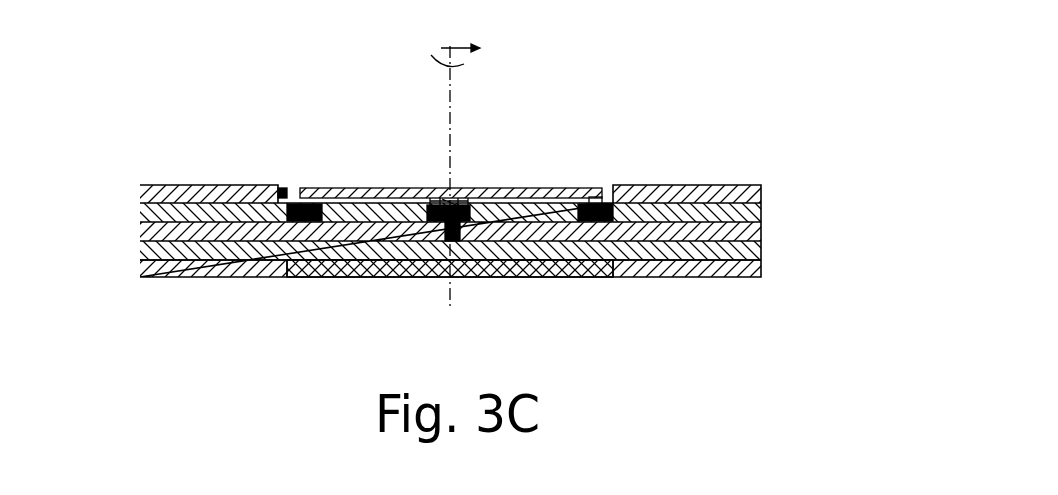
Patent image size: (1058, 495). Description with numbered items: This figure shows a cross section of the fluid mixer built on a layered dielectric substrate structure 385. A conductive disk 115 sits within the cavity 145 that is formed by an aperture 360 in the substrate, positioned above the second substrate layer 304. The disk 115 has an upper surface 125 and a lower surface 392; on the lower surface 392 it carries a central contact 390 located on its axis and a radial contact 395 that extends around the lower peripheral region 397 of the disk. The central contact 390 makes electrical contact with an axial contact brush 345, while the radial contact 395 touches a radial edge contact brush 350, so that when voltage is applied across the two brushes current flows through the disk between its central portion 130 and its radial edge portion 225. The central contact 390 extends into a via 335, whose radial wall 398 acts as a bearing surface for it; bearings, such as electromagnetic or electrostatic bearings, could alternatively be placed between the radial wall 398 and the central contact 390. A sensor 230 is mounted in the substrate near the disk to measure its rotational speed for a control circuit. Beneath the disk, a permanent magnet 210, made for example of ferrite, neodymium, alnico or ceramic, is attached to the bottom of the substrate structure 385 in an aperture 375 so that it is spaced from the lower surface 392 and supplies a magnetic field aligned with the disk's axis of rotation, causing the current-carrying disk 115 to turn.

The substrate structure 385 is at (777, 185).
The second substrate layer 304 is at (762, 213).
The aperture 375 is at (436, 268).
The magnet 210 is at (392, 268).
The central contact 390 is at (437, 203).
The radial edge contact brush 350 is at (610, 222).
The axial contact brush 345 is at (459, 242).
The central portion 130 is at (456, 193).
The radial wall 398 is at (473, 200).
The upper surface 125 is at (372, 187).
The disk 115 is at (538, 190).
The via 335 is at (431, 197).
The cavity 145 is at (310, 181).
The aperture 360 is at (293, 197).
The sensor 230 is at (279, 189).
The lower peripheral region 397 is at (595, 201).
The radial edge portion 225 is at (601, 187).
The radial contact 395 is at (605, 200).
The lower surface 392 is at (519, 198).